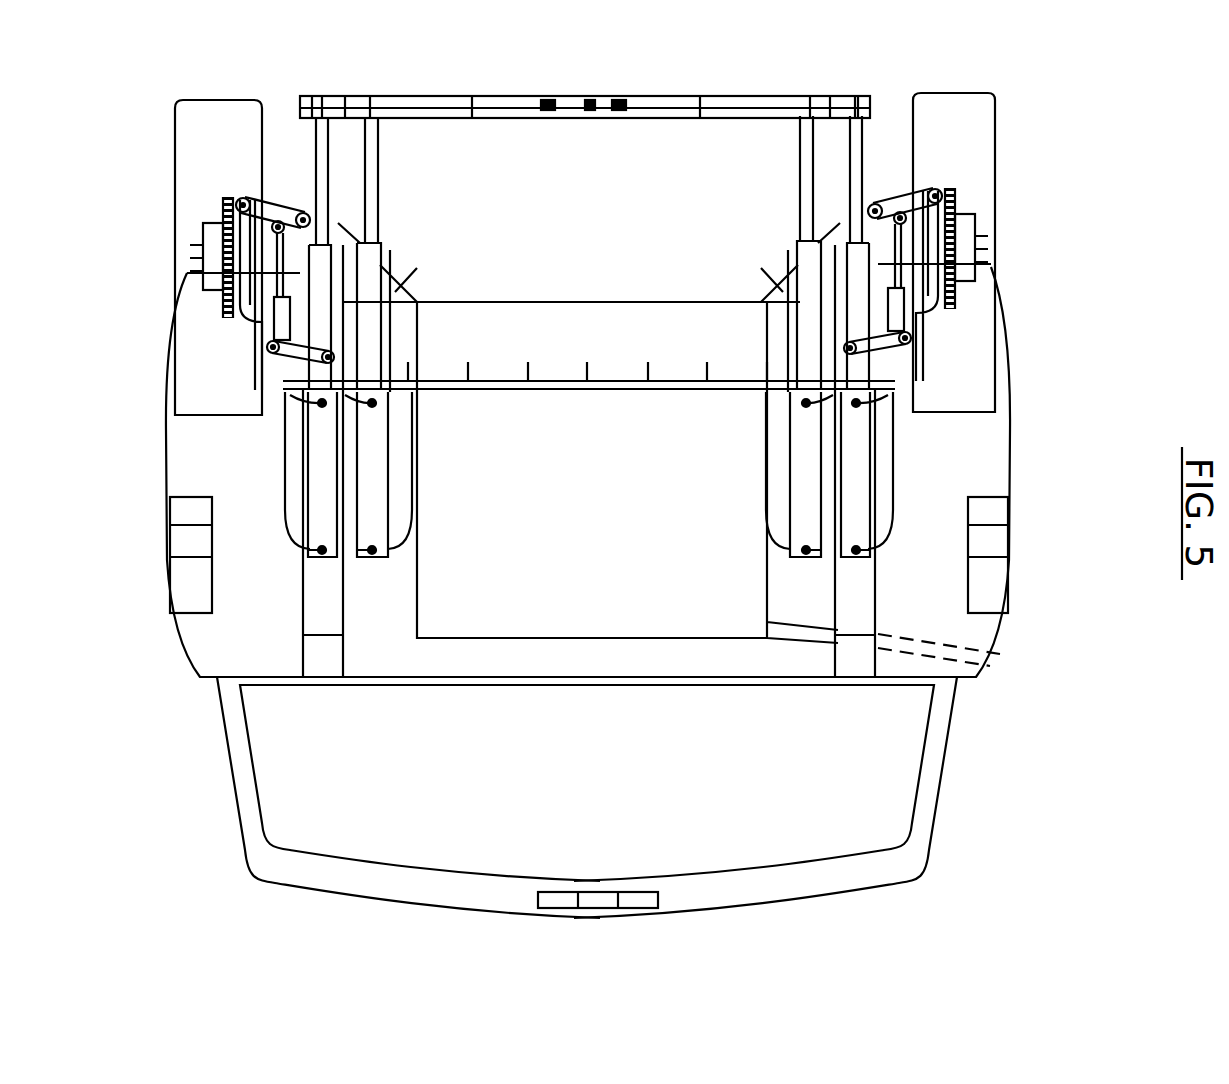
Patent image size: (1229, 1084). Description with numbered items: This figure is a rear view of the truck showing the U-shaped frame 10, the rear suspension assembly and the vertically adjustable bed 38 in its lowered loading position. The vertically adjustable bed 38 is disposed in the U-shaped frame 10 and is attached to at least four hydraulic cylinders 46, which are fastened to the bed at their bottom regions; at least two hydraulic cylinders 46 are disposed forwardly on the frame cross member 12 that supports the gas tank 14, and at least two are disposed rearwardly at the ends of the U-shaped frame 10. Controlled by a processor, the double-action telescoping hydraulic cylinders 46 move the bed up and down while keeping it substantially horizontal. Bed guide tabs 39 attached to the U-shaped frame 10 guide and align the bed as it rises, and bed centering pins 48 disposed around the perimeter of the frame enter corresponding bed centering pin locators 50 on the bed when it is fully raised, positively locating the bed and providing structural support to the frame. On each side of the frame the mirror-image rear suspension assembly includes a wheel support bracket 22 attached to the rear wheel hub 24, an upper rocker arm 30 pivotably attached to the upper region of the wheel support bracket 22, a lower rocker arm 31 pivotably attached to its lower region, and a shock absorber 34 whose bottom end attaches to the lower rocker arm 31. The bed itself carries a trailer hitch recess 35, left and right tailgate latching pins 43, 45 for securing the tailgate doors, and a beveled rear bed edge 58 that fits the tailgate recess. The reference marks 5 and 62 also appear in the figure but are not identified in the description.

The vehicle 5 is at (315, 897).
The U-shaped frame 10 is at (396, 294).
The frame cross member 12 is at (538, 298).
The gas tank 14 is at (553, 643).
The wheel support bracket 22 is at (245, 324).
The rear wheel hub 24 is at (206, 228).
The upper rocker arm 30 is at (276, 358).
The lower rocker arm 31 is at (272, 203).
The shock absorber 34 is at (282, 398).
The trailer hitch recess 35 is at (590, 122).
The vertically adjustable bed 38 is at (742, 95).
The bed guide tabs 39 is at (341, 222).
The left tailgate latching pin 43 is at (548, 122).
The right tailgate latching pin 45 is at (625, 122).
The hydraulic cylinders 46 is at (365, 565).
The bed centering pins 48 is at (705, 360).
The bed centering pin locators 50 is at (475, 97).
The rear bed edge 58 is at (311, 99).
The vehicle body side 62 is at (175, 625).